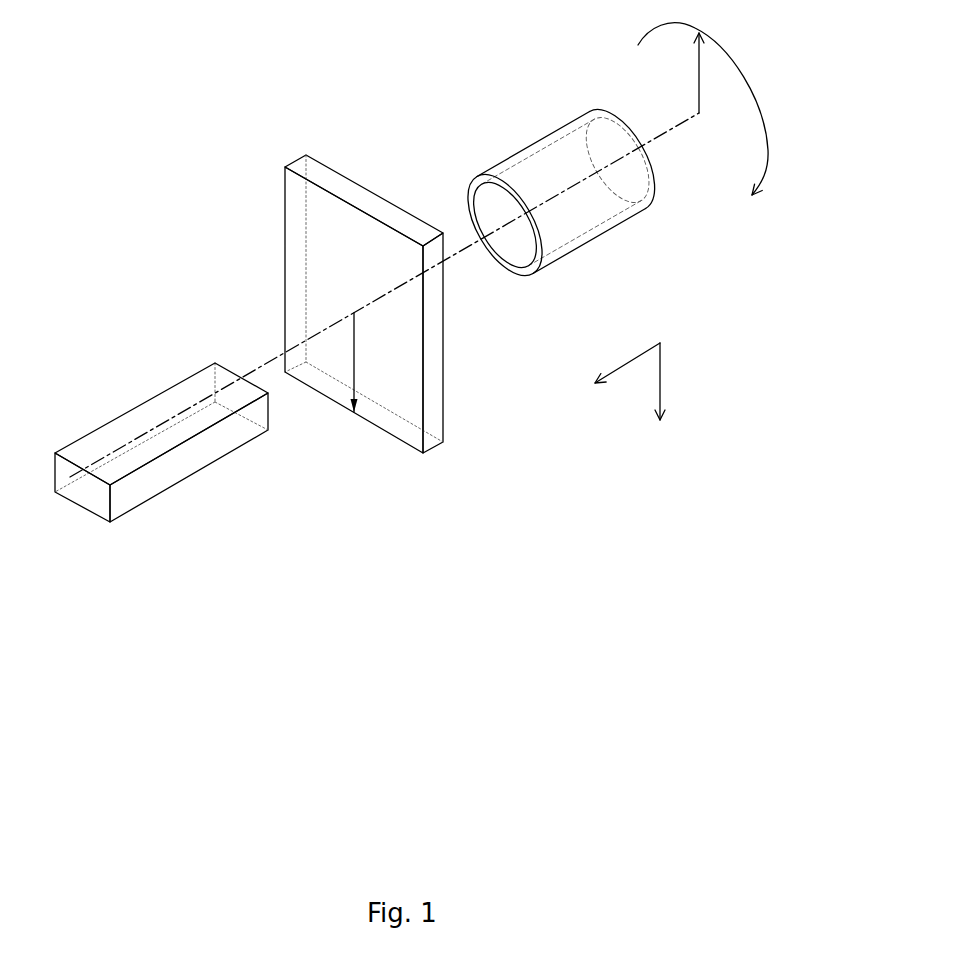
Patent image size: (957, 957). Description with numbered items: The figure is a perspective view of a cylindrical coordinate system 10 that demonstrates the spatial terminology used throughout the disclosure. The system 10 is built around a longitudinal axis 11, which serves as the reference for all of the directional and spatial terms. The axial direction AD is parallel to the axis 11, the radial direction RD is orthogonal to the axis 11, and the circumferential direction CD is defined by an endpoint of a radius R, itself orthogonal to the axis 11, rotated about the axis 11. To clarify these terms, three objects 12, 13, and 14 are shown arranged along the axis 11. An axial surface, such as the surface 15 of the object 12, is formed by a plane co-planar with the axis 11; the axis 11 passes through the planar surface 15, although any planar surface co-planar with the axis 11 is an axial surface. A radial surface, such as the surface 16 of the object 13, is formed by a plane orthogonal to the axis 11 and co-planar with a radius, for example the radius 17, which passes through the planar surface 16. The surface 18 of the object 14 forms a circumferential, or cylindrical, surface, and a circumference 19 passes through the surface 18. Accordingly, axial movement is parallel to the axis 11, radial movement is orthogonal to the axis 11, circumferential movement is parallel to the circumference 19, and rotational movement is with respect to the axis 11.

The cylindrical coordinate system 10 is at (245, 197).
The longitudinal axis 11 is at (652, 140).
The object 12 is at (132, 510).
The object 13 is at (450, 444).
The object 14 is at (583, 250).
The axial surface 15 is at (127, 428).
The radial surface 16 is at (298, 267).
The radius 17 is at (355, 357).
The circumferential surface 18 is at (532, 133).
The circumference 19 is at (465, 195).
The radius R is at (699, 73).
The circumferential direction CD is at (743, 77).
The axial direction AD is at (628, 363).
The radial direction RD is at (662, 378).